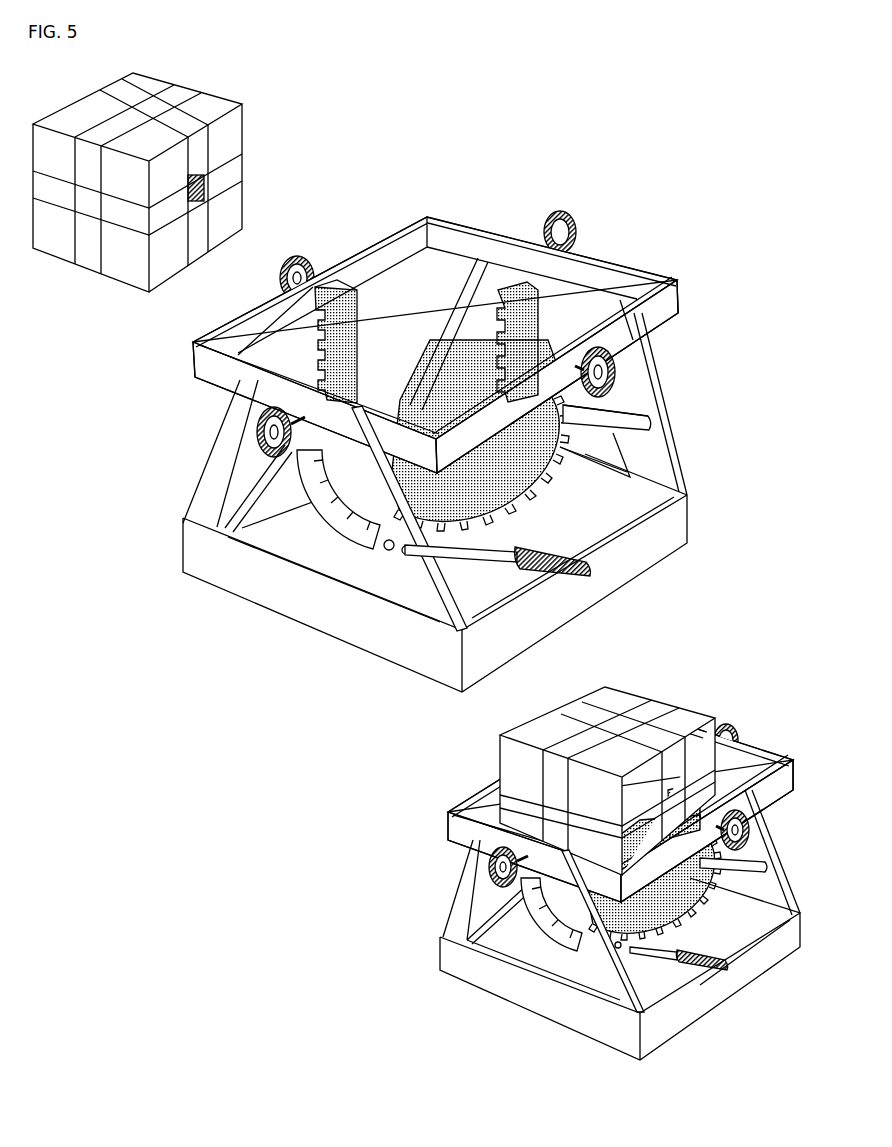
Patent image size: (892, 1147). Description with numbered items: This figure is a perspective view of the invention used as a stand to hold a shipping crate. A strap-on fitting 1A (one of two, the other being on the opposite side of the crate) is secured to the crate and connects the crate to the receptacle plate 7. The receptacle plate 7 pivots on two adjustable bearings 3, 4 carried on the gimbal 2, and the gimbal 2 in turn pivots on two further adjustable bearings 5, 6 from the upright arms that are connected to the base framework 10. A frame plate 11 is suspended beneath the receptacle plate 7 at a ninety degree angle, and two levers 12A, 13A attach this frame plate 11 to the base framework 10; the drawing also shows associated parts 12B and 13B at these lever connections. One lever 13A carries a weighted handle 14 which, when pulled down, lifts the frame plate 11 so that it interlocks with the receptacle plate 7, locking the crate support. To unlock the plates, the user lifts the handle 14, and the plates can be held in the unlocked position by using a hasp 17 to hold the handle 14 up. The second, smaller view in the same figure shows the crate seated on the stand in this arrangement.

The strap-on fitting 1A is at (207, 180).
The gimbal 2 is at (457, 228).
The adjustable bearing 3 is at (627, 362).
The adjustable bearing 4 is at (278, 278).
The adjustable bearing 5 is at (577, 222).
The adjustable bearing 6 is at (253, 423).
The receptacle plate 7 is at (337, 284).
The base framework 10 is at (207, 504).
The frame plate 11 is at (308, 506).
The lever 12A is at (618, 414).
The shaft end 12B is at (646, 425).
The lever 13A is at (478, 556).
The sector gear pivot 13B is at (386, 548).
The weighted handle 14 is at (588, 576).
The hasp 17 is at (406, 553).